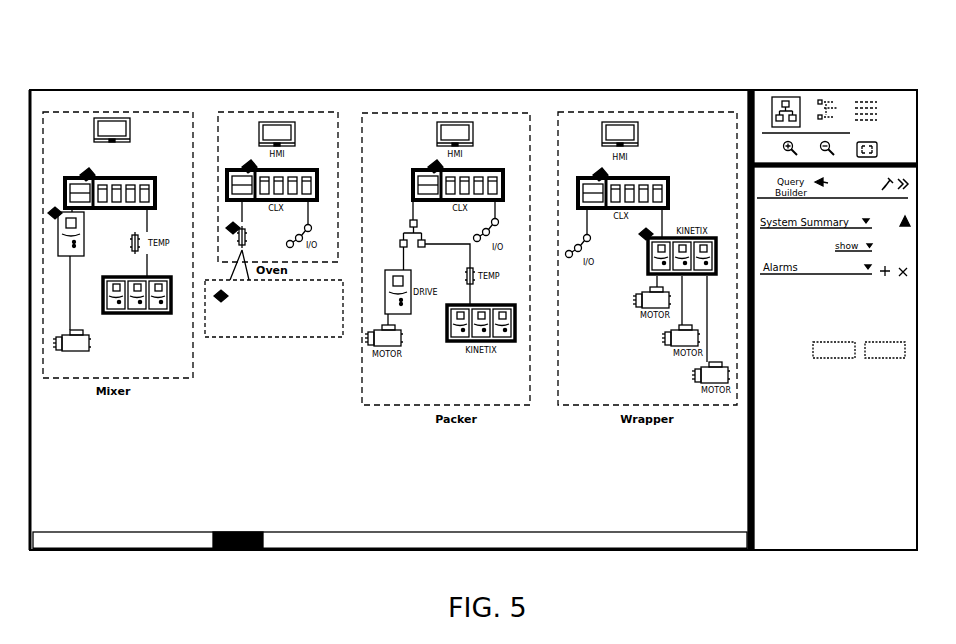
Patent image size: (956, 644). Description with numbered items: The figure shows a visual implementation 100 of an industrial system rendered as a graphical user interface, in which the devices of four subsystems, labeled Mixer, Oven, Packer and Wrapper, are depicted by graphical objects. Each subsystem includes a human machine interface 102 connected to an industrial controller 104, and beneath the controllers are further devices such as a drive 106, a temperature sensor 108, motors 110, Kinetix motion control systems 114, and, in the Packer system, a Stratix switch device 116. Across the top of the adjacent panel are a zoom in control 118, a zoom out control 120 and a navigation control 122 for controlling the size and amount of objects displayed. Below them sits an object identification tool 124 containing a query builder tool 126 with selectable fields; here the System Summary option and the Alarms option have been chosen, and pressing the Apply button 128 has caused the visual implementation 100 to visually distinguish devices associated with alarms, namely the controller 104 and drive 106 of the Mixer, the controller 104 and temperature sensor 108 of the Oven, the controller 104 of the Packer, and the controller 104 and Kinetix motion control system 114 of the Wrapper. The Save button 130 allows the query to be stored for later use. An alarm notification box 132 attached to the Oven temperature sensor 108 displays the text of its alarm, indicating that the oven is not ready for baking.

The visual implementation 100 is at (152, 90).
The human machine interface 102 is at (130, 141).
The industrial controller 104 is at (138, 178).
The drive 106 is at (84, 251).
The temperature sensor 108 is at (235, 242).
The motor 110 is at (91, 338).
The Kinetix motion control system 114 is at (170, 297).
The Stratix device 116 is at (410, 223).
The zoom in control 118 is at (786, 141).
The zoom out control 120 is at (823, 141).
The navigation control 122 is at (877, 150).
The object identification tool 124 is at (912, 221).
The query builder tool 126 is at (826, 182).
The Apply button 128 is at (832, 359).
The Save button 130 is at (892, 359).
The alarm notification box 132 is at (291, 338).